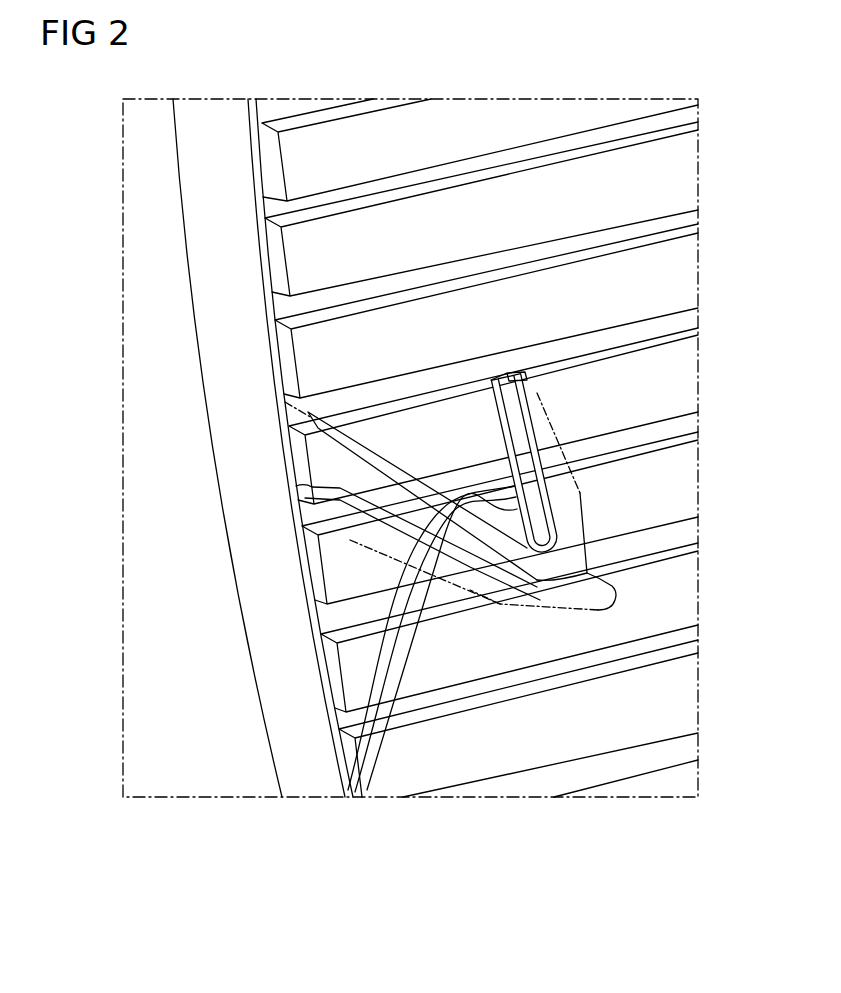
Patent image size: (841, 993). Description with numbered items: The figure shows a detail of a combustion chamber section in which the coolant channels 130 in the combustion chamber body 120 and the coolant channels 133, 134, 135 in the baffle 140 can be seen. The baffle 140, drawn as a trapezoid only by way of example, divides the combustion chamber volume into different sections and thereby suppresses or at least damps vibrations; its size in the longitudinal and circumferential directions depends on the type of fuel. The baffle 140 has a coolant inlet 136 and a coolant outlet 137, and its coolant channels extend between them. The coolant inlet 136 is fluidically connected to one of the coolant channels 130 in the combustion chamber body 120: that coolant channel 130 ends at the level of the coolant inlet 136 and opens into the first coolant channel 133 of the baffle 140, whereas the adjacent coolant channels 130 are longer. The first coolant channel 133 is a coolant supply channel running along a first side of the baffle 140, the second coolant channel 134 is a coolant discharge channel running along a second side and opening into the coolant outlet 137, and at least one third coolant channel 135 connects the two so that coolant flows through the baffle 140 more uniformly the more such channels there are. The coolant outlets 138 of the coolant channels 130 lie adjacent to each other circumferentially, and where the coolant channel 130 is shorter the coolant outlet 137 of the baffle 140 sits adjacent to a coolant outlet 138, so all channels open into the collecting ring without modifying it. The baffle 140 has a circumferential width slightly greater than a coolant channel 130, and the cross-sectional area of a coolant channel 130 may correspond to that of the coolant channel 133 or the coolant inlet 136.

The combustion chamber body 120 is at (445, 424).
The coolant channels 130 is at (686, 172).
The first coolant channel 133 is at (580, 493).
The second coolant channel 134 is at (408, 512).
The third coolant channel 135 is at (368, 787).
The coolant inlet 136 is at (525, 380).
The coolant outlet 137 is at (303, 465).
The coolant outlets 138 is at (275, 248).
The baffle 140 is at (596, 580).